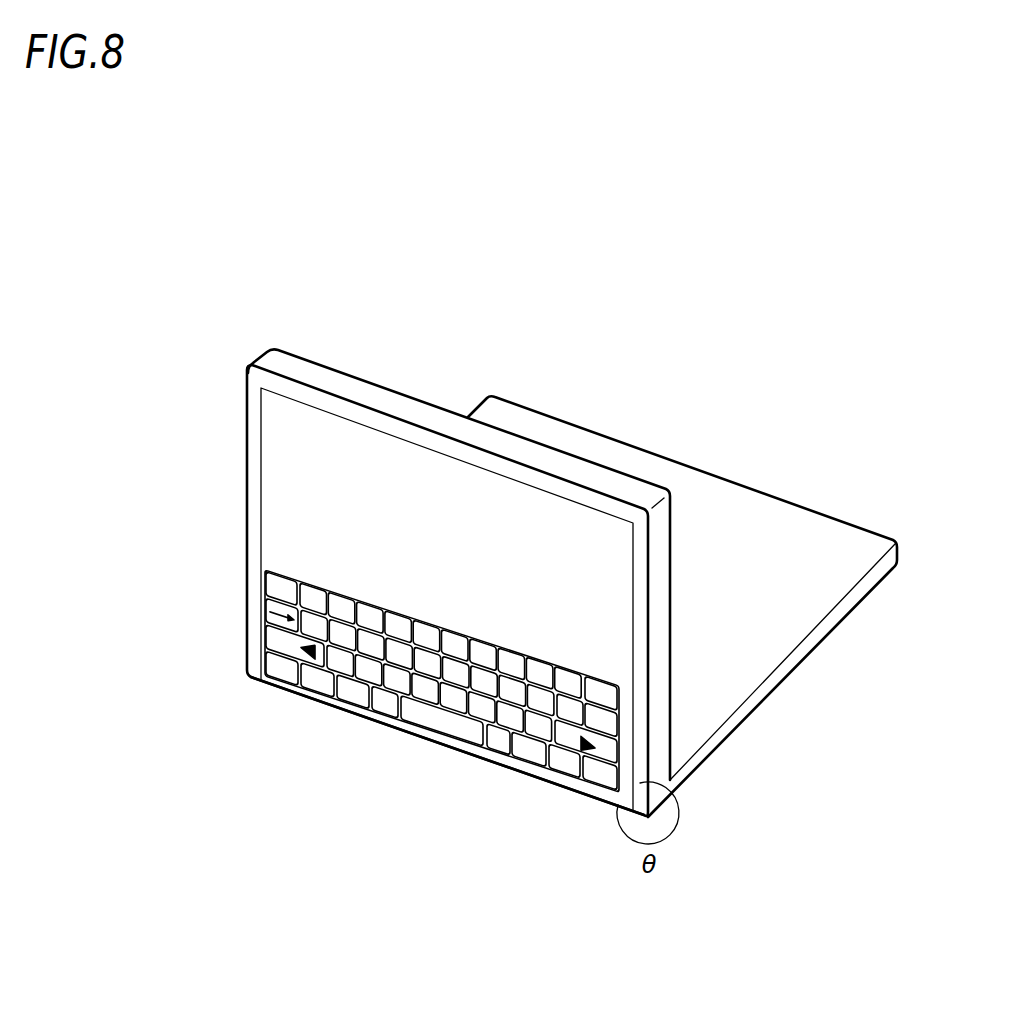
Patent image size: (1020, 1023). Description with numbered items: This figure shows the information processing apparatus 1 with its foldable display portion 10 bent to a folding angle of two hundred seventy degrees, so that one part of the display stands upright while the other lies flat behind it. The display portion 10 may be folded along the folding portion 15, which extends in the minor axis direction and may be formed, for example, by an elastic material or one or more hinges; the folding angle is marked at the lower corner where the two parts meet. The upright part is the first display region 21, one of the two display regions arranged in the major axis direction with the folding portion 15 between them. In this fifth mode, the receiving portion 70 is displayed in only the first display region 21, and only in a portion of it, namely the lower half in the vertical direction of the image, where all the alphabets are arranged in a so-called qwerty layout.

The information processing apparatus 1 is at (831, 406).
The display portion 10 is at (302, 357).
The first display region 21 is at (261, 471).
The folding portion 15 is at (472, 756).
The receiving portion 70 is at (597, 633).